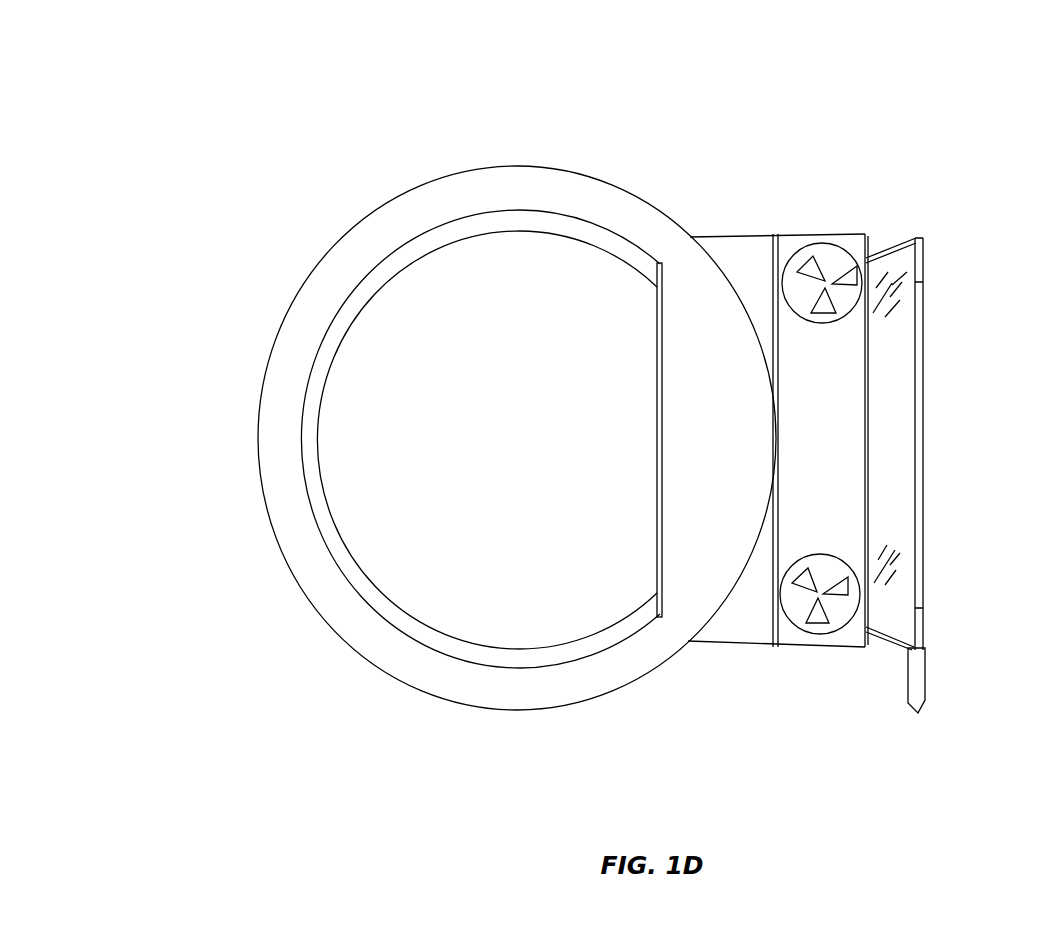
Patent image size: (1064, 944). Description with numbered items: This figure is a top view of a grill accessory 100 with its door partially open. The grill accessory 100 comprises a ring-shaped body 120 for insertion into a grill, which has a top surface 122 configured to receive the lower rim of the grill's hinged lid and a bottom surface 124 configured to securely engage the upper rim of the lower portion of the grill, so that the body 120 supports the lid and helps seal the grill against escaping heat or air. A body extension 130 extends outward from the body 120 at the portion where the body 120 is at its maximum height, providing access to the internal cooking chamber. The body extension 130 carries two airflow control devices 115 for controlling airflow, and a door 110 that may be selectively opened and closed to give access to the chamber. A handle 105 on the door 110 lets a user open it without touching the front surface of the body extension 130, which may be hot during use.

The grill accessory 100 is at (199, 106).
The handle 105 is at (919, 713).
The door 110 is at (908, 398).
The airflow control devices 115 is at (836, 252).
The body 120 is at (273, 534).
The top surface 122 is at (450, 687).
The bottom surface 124 is at (550, 707).
The body extension 130 is at (748, 234).